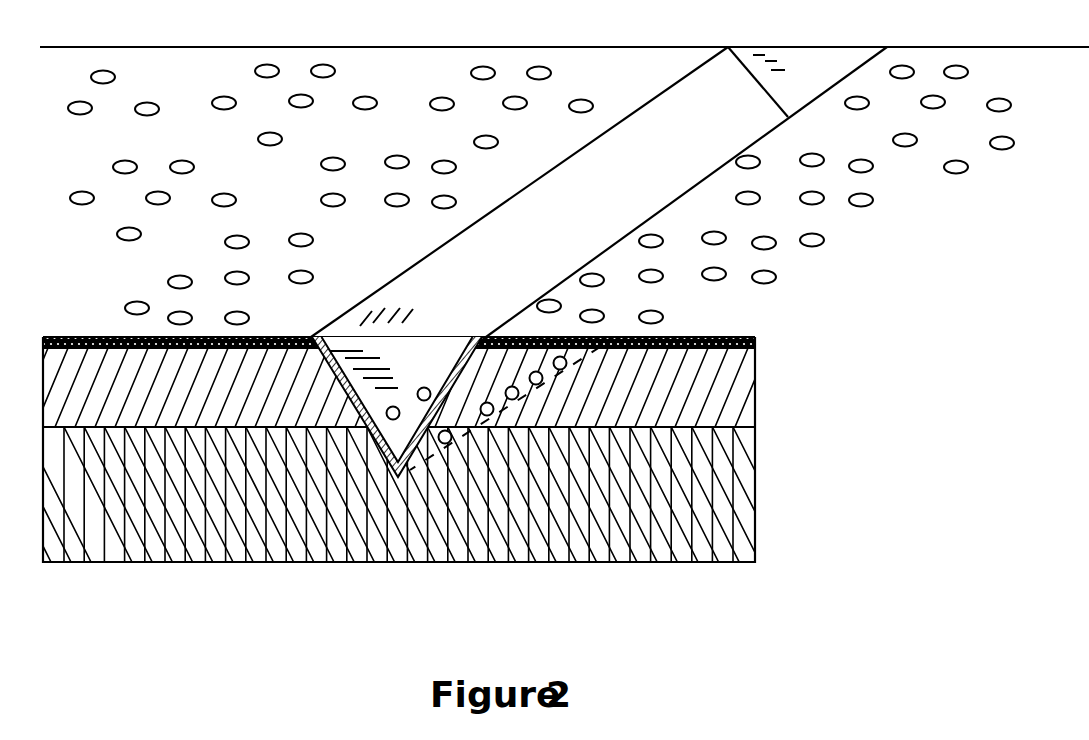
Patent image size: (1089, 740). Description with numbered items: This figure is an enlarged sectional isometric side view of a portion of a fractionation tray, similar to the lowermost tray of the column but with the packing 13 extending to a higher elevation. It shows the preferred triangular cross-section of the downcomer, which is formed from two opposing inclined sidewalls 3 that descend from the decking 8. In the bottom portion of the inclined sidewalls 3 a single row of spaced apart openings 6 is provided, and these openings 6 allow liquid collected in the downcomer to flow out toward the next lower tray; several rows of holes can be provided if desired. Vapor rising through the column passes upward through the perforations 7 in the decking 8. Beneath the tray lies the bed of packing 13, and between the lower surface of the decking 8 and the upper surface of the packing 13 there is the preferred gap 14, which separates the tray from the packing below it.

The inclined sidewall 3 is at (599, 178).
The opening 6 is at (506, 391).
The perforation 7 is at (541, 195).
The decking 8 is at (564, 36).
The packing 13 is at (402, 494).
The gap 14 is at (758, 348).